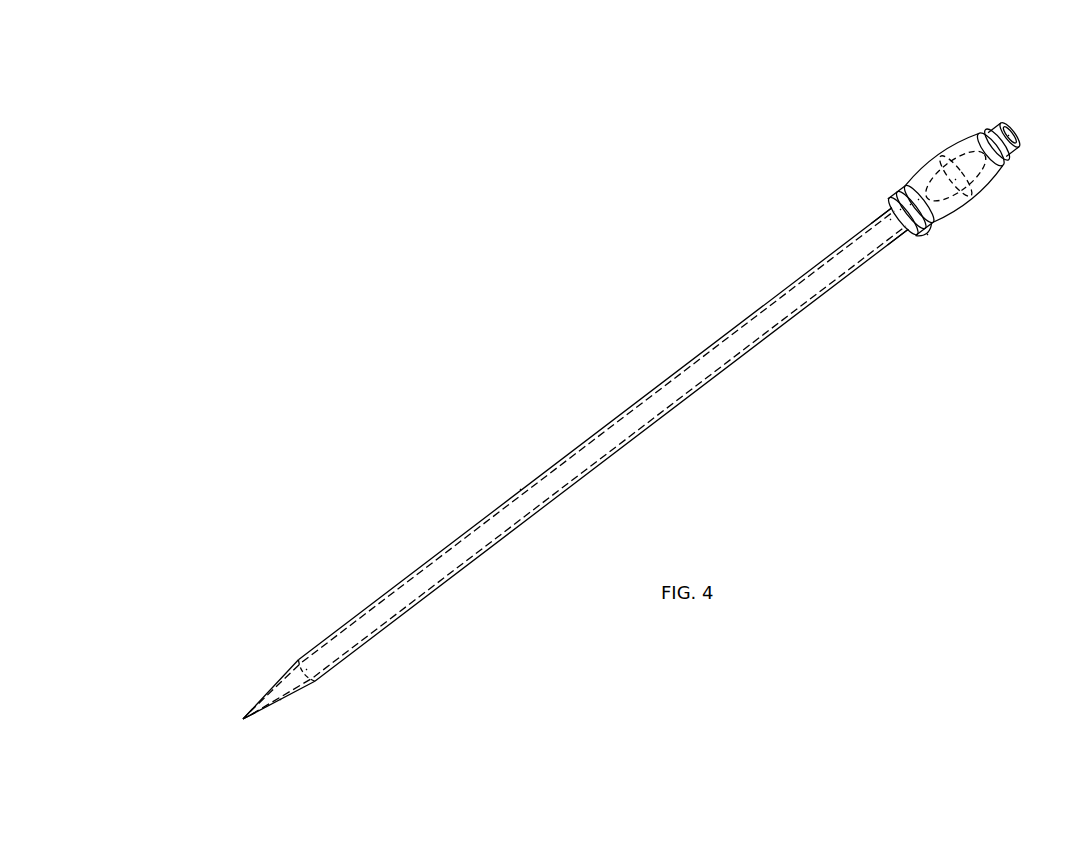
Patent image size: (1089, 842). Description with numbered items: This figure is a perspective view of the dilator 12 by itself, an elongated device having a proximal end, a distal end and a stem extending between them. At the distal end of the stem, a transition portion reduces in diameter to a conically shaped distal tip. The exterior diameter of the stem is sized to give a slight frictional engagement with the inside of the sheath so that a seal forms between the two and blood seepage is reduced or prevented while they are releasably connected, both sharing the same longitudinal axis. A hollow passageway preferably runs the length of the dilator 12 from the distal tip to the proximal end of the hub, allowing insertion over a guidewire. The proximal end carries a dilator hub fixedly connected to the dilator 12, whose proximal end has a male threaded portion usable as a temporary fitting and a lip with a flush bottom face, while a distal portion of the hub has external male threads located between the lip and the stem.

The dilator 12 is at (628, 426).